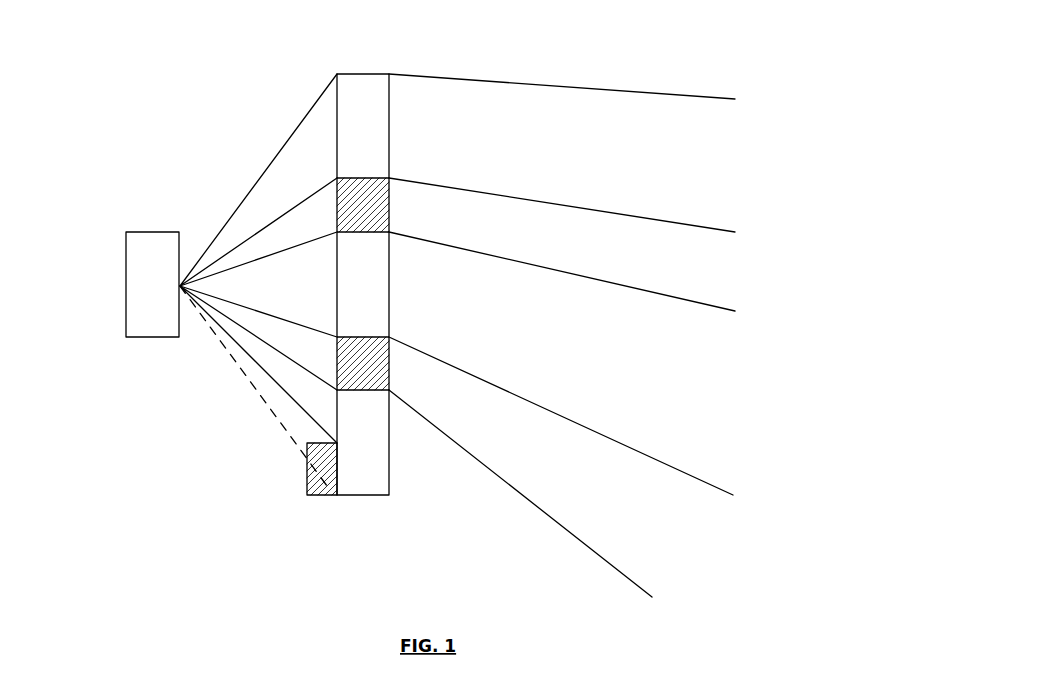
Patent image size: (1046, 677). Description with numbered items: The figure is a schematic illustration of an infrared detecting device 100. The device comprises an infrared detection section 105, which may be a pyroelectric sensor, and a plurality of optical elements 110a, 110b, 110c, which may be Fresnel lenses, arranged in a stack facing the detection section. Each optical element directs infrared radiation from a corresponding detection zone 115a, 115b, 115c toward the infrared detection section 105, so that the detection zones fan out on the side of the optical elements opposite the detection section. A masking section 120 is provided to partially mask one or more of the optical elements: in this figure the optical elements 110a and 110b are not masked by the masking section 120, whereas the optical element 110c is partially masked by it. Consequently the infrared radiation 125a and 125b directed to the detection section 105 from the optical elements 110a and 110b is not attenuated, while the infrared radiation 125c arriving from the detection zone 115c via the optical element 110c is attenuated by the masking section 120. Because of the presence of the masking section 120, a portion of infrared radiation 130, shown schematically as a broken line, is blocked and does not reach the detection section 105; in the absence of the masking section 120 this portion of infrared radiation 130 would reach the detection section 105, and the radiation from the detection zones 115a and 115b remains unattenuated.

The infrared detecting device 100 is at (133, 142).
The infrared detection section 105 is at (143, 258).
The optical element 110a is at (351, 90).
The optical element 110b is at (373, 307).
The optical element 110c is at (374, 487).
The detection zone 115a is at (717, 168).
The detection zone 115b is at (710, 366).
The detection zone 115c is at (598, 578).
The masking section 120 is at (316, 497).
The infrared radiation 125a is at (273, 178).
The infrared radiation 125b is at (227, 283).
The infrared radiation 125c is at (288, 377).
The portion of infrared radiation 130 is at (287, 437).